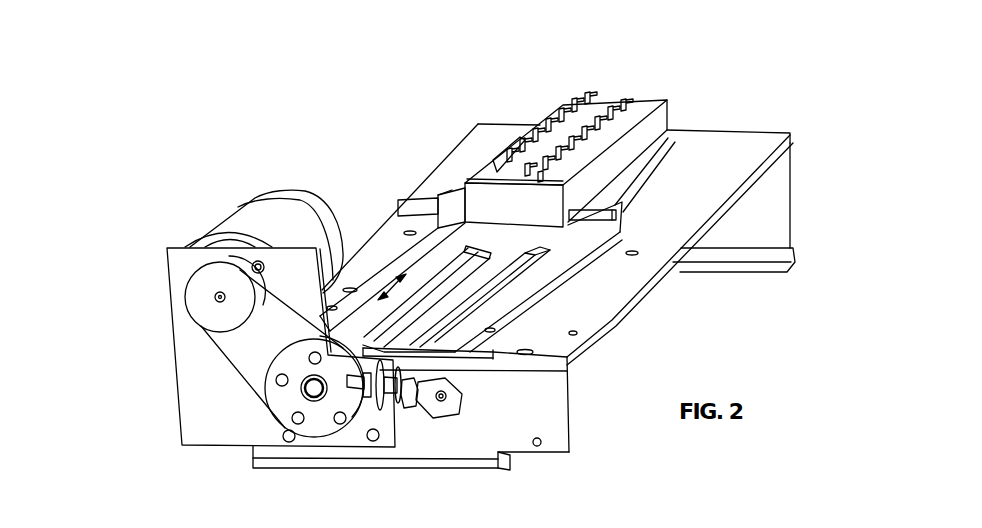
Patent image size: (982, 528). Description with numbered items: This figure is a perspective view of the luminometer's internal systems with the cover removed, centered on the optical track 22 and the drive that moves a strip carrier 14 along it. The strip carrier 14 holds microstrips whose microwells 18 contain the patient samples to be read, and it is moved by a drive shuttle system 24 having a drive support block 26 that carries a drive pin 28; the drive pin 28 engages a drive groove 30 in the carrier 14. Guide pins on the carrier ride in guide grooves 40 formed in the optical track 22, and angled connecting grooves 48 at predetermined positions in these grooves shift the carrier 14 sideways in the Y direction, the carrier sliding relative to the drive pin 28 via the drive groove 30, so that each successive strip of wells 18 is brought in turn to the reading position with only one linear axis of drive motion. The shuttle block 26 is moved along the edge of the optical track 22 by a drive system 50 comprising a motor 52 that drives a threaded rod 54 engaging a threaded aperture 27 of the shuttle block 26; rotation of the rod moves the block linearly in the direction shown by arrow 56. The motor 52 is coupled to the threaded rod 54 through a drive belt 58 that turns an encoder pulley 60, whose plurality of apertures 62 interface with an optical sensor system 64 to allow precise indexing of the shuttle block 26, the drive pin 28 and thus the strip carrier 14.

The strip carrier 14 is at (650, 131).
The microwells 18 is at (578, 96).
The optical track 22 is at (816, 120).
The drive shuttle system 24 is at (430, 194).
The drive support block 26 is at (450, 196).
The threaded aperture 27 is at (435, 225).
The drive pin 28 is at (617, 212).
The drive groove 30 is at (612, 200).
The guide grooves 40 is at (483, 296).
The angled connecting grooves 48 is at (547, 252).
The drive system 50 is at (124, 277).
The motor 52 is at (257, 225).
The threaded rod 54 is at (312, 390).
The arrow 56 is at (393, 288).
The drive belt 58 is at (215, 352).
The encoder pulley 60 is at (280, 410).
The apertures 62 is at (300, 424).
The optical sensor system 64 is at (427, 426).